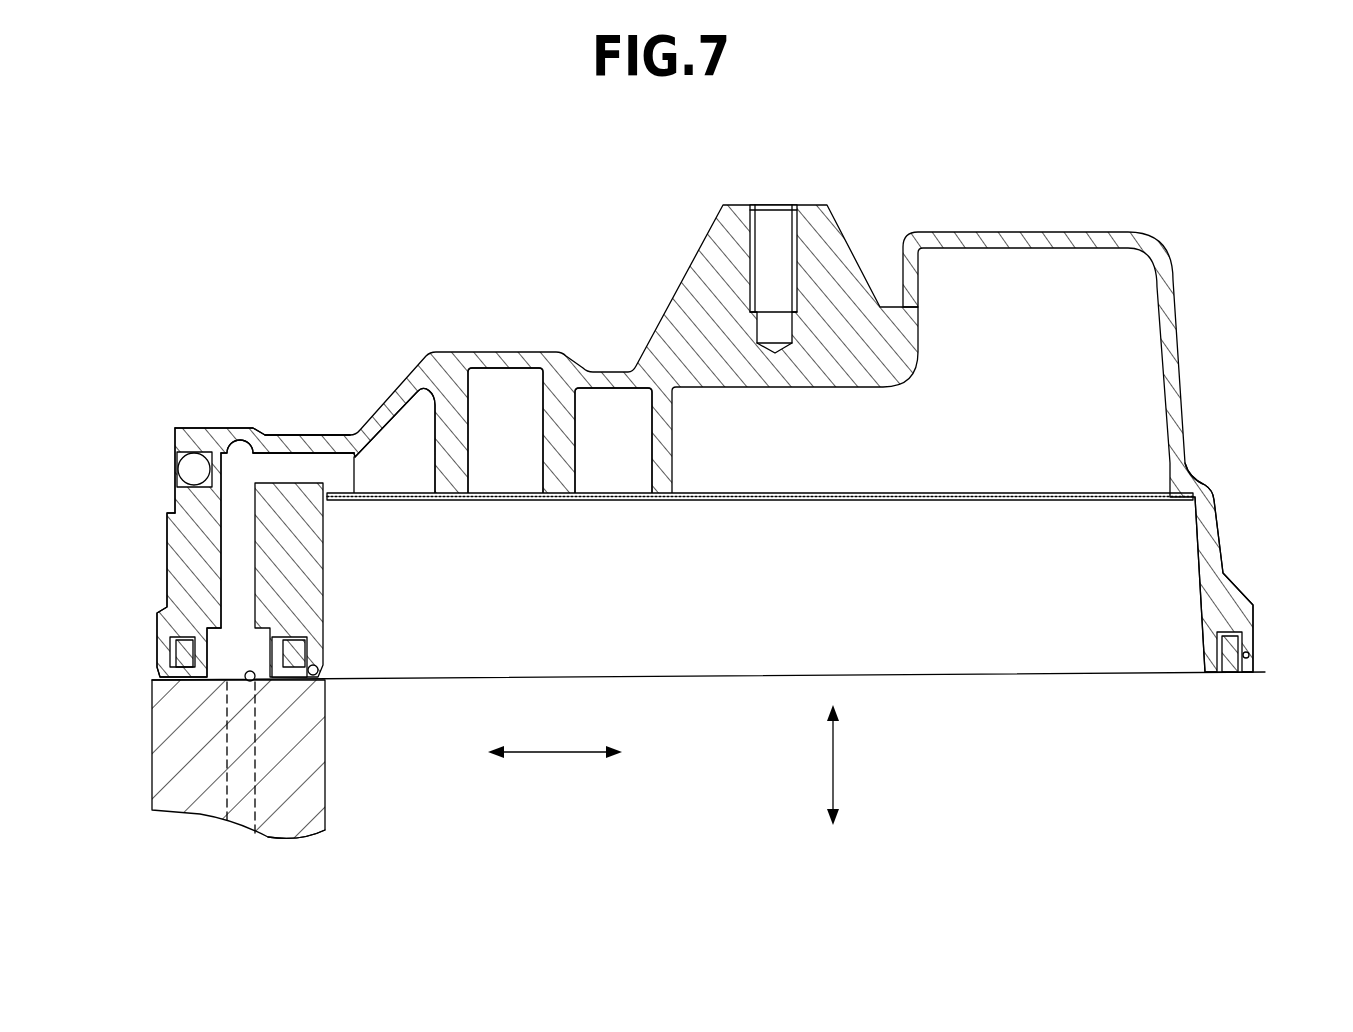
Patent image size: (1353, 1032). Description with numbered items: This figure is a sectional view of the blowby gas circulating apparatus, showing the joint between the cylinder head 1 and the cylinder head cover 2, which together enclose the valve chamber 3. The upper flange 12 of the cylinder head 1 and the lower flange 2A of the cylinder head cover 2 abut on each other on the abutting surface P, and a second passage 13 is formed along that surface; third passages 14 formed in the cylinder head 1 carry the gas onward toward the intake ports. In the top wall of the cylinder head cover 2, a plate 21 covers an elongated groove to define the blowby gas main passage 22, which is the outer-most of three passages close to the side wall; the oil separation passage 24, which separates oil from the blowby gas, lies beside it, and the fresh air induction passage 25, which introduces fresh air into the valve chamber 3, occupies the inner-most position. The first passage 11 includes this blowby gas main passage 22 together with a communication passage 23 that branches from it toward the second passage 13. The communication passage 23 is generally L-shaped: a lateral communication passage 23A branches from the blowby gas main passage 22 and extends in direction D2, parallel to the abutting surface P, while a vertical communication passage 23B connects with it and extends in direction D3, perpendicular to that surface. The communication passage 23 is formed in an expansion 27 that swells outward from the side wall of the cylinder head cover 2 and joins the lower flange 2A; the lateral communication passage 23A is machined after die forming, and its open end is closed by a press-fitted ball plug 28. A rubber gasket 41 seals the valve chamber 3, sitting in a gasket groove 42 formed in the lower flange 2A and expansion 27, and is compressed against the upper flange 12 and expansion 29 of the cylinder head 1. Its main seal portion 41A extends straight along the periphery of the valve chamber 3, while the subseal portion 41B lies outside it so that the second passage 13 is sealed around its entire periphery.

The cylinder head 1 is at (234, 793).
The cylinder head cover 2 is at (996, 212).
The lower flange 2A is at (1217, 596).
The valve chamber 3 is at (672, 655).
The first passage 11 is at (362, 303).
The upper flange 12 is at (258, 682).
The second passage 13 is at (255, 637).
The third passage 14 is at (240, 832).
The plate 21 is at (622, 500).
The blowby gas main passage 22 is at (405, 430).
The communication passage 23 is at (318, 455).
The lateral communication passage 23A is at (275, 437).
The vertical communication passage 23B is at (225, 538).
The oil separation passage 24 is at (500, 385).
The fresh air induction passage 25 is at (613, 405).
The expansion 27 is at (170, 600).
The ball plug 28 is at (185, 470).
The expansion 29 is at (305, 805).
The gasket 41 is at (1228, 676).
The main seal portion 41A is at (318, 693).
The subseal portion 41B is at (172, 653).
The gasket groove 42 is at (1254, 650).
The direction D2 is at (553, 753).
The direction D3 is at (833, 755).